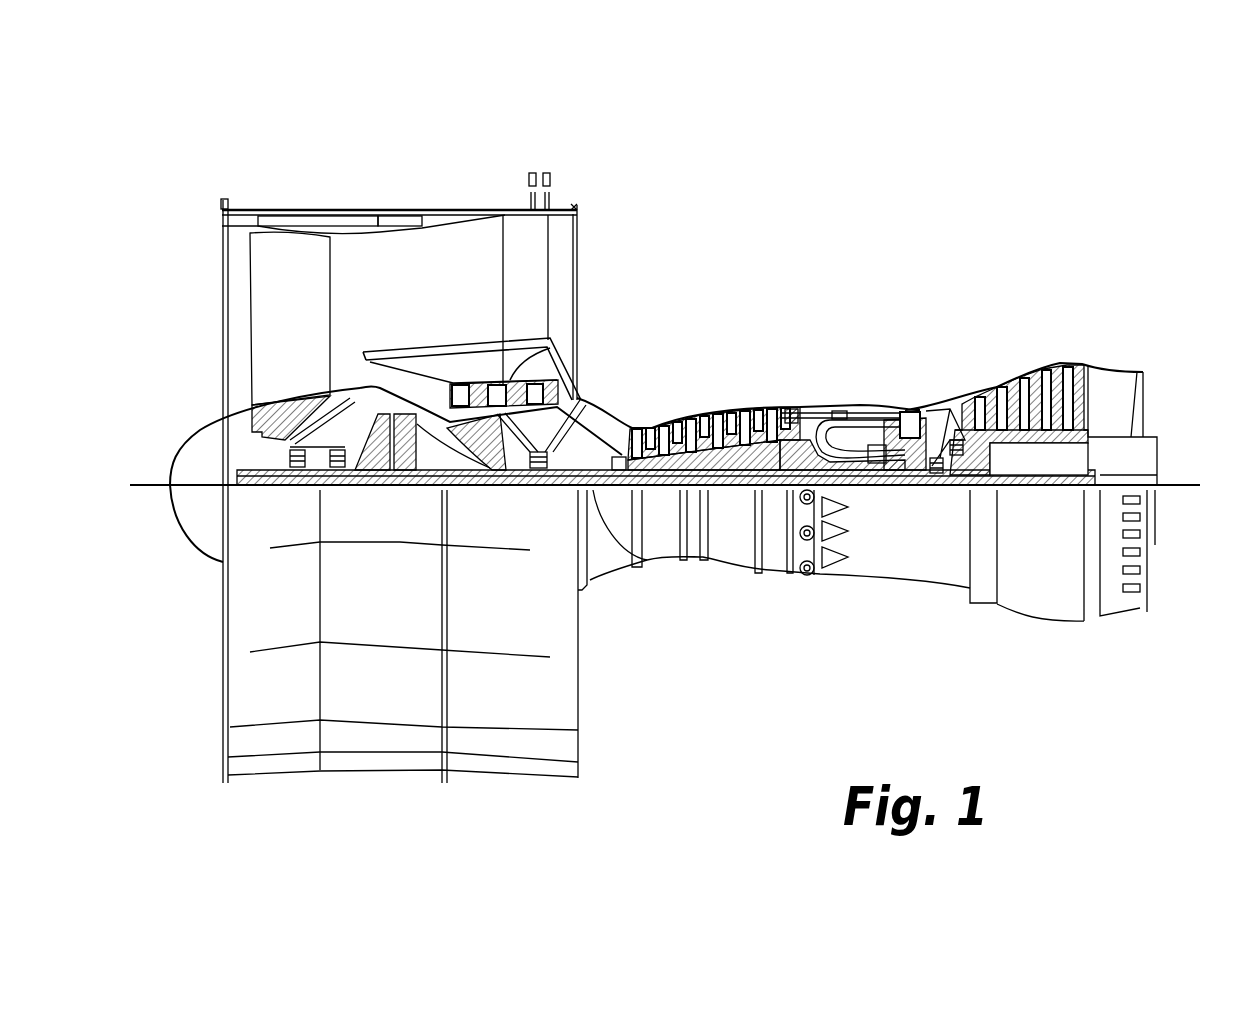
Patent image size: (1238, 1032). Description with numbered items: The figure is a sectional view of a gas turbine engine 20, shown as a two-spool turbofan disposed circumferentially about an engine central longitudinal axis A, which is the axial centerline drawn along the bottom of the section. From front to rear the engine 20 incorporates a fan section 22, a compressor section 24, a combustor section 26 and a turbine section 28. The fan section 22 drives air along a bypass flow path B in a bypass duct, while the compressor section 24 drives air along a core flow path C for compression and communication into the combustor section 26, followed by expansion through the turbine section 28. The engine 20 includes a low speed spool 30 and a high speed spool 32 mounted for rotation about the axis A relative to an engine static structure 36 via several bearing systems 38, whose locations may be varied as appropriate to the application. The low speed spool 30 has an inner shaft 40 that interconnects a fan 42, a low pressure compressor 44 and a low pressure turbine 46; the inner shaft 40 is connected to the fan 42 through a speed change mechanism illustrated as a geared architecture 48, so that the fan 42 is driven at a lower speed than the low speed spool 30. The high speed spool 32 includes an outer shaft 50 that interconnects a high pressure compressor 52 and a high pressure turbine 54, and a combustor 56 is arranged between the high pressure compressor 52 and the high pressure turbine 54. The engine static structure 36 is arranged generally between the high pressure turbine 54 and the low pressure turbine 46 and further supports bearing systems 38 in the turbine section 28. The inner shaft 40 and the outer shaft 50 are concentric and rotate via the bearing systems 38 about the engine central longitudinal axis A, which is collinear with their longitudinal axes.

The gas turbine engine 20 is at (862, 238).
The fan section 22 is at (425, 178).
The compressor section 24 is at (822, 325).
The combustor section 26 is at (884, 325).
The turbine section 28 is at (892, 325).
The low speed spool 30 is at (735, 492).
The high speed spool 32 is at (770, 446).
The engine static structure 36 is at (776, 578).
The bearing systems 38 is at (300, 490).
The inner shaft 40 is at (633, 563).
The fan 42 is at (300, 341).
The low pressure compressor 44 is at (578, 348).
The low pressure turbine 46 is at (1037, 370).
The geared architecture 48 is at (410, 490).
The outer shaft 50 is at (858, 470).
The high pressure compressor 52 is at (712, 460).
The high pressure turbine 54 is at (907, 410).
The combustor 56 is at (849, 432).
The engine central longitudinal axis A is at (1187, 485).
The bypass flow path B is at (456, 283).
The core flow path C is at (403, 390).